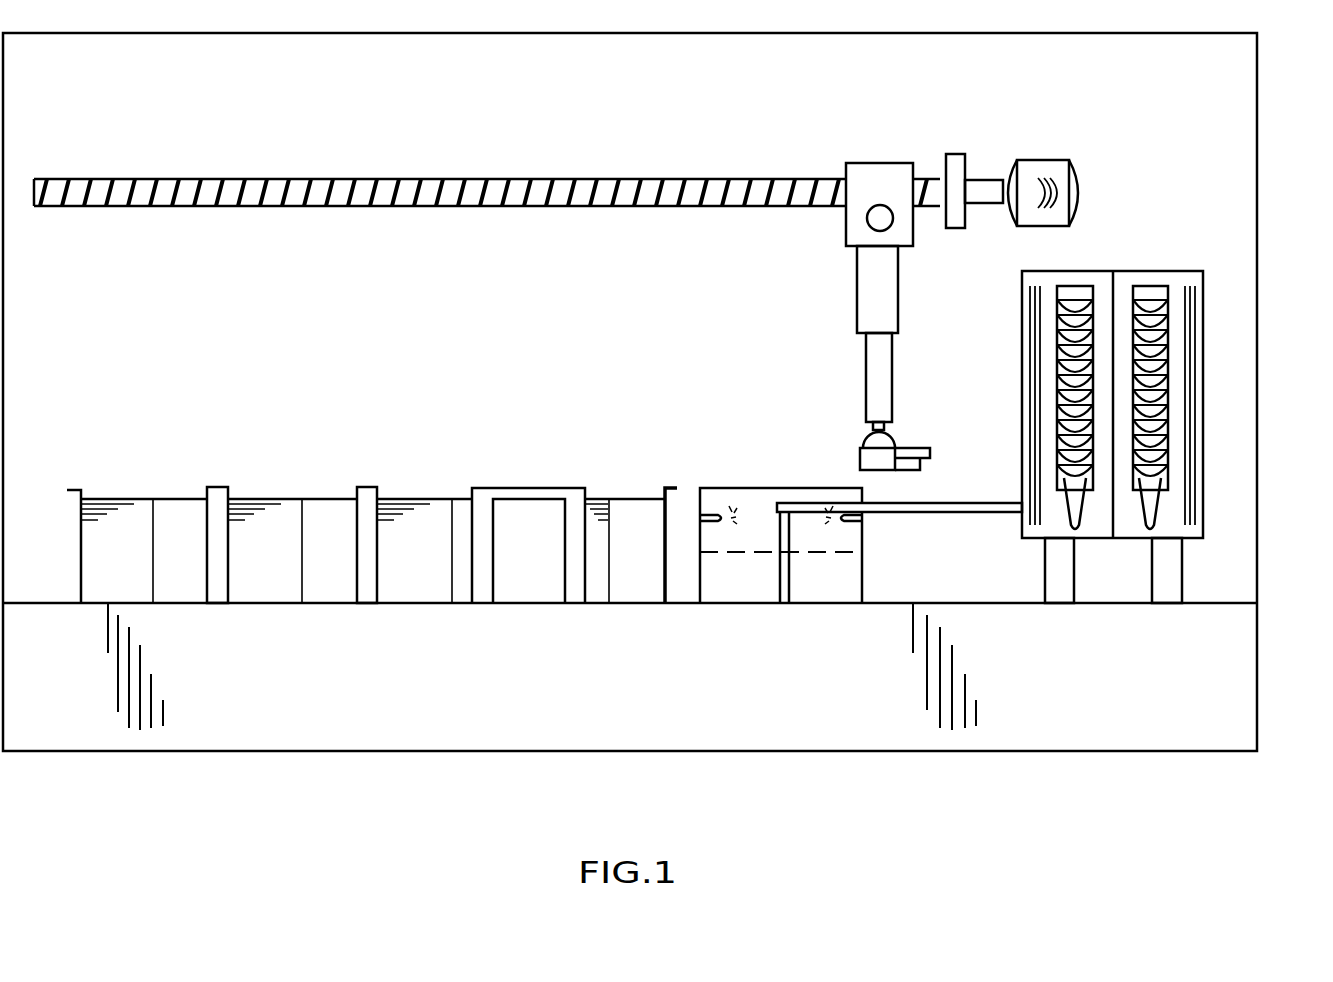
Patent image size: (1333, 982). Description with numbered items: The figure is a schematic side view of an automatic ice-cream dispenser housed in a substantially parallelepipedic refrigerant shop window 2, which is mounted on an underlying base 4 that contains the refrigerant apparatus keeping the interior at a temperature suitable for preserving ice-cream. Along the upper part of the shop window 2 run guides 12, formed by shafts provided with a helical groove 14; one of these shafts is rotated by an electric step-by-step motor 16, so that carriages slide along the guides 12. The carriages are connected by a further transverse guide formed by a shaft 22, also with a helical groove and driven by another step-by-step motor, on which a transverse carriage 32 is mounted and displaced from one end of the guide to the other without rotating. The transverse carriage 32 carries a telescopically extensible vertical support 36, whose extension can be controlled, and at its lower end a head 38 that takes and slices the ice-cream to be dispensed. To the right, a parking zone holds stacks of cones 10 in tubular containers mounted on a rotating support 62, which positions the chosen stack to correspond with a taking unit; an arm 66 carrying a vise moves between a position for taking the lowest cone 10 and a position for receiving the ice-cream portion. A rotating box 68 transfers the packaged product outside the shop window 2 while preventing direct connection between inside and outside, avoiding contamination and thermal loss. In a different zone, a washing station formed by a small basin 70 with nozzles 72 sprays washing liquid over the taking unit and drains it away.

The refrigerant shop window 2 is at (1259, 241).
The base 4 is at (847, 753).
The cones 10 is at (1155, 516).
The guides 12 is at (487, 155).
The helical groove 14 is at (606, 186).
The electric step-by-step motor 16 is at (1030, 160).
The shaft 22 is at (888, 226).
The transverse carriage 32 is at (875, 163).
The vertical support 36 is at (866, 378).
The head 38 is at (862, 450).
The rotating support 62 is at (1203, 430).
The arm 66 is at (978, 503).
The rotating box 68 is at (535, 488).
The small basin 70 is at (780, 509).
The nozzles 72 is at (716, 516).